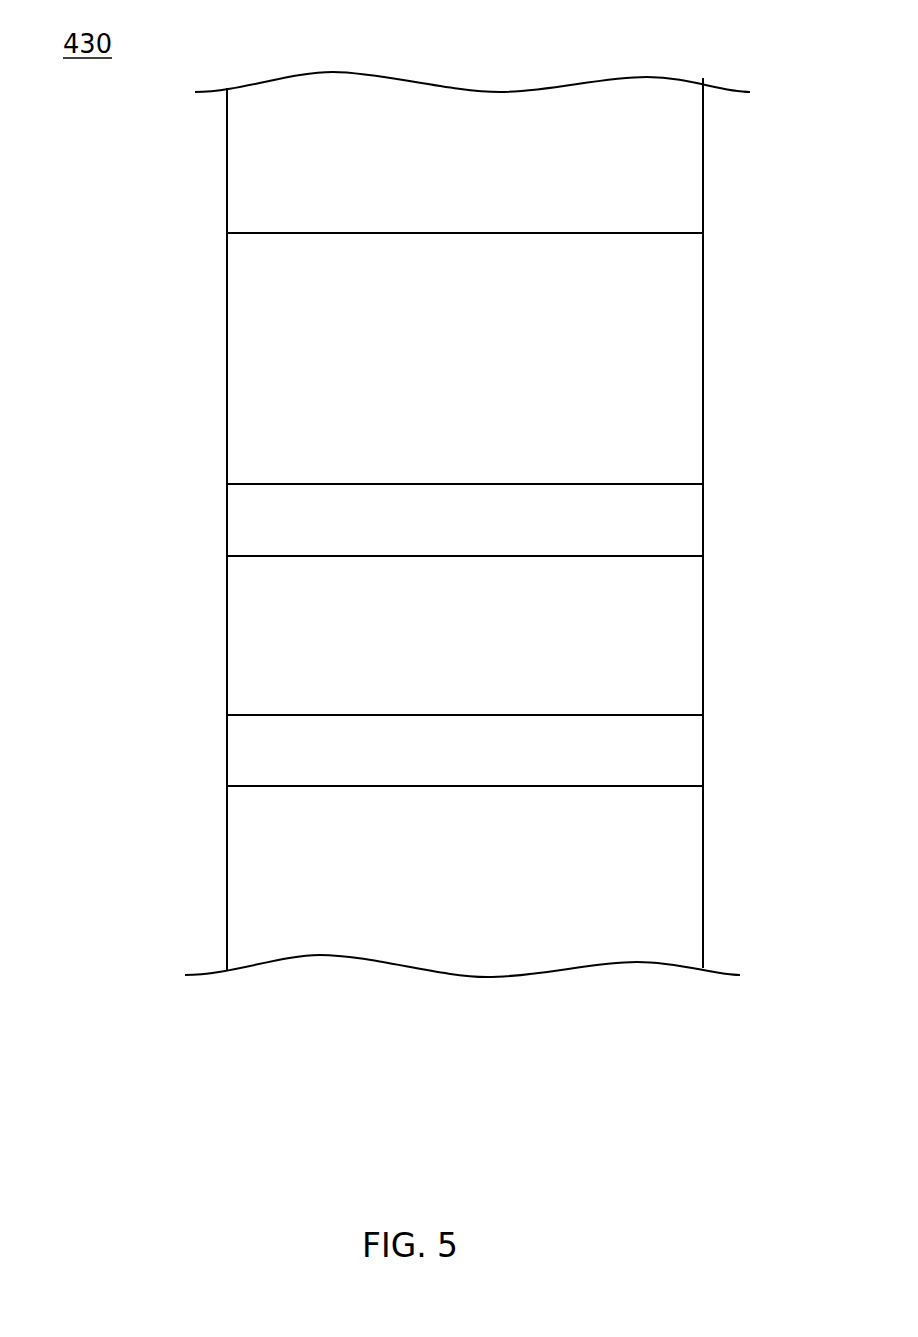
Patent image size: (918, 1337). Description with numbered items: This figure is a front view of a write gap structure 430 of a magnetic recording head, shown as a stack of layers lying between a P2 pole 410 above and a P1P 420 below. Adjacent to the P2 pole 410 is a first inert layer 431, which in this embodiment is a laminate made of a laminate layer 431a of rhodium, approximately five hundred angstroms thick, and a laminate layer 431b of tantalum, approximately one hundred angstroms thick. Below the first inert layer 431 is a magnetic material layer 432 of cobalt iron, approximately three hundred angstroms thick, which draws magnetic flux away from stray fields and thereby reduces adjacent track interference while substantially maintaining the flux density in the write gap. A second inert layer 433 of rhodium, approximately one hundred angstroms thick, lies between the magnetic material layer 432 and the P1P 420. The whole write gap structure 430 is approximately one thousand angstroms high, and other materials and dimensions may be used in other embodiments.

The P2 pole 410 is at (472, 152).
The P1P 420 is at (462, 881).
The write gap structure 430 is at (213, 233).
The first inert layer 431 is at (713, 233).
The laminate layer 431a is at (465, 358).
The laminate layer 431b is at (465, 520).
The magnetic material layer 432 is at (688, 634).
The second inert layer 433 is at (687, 757).